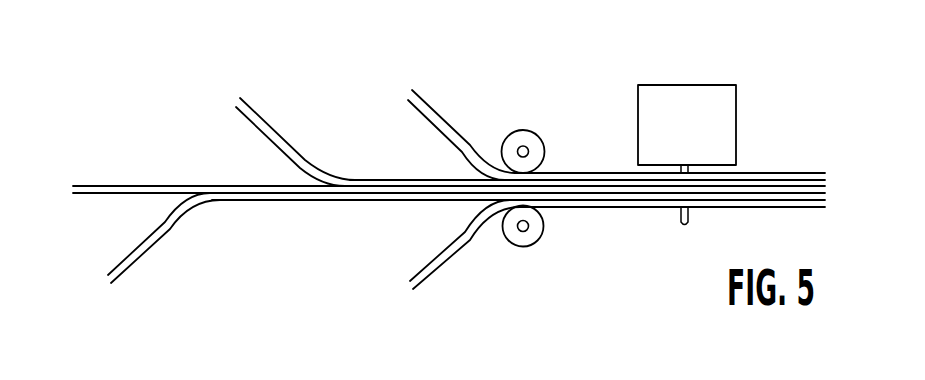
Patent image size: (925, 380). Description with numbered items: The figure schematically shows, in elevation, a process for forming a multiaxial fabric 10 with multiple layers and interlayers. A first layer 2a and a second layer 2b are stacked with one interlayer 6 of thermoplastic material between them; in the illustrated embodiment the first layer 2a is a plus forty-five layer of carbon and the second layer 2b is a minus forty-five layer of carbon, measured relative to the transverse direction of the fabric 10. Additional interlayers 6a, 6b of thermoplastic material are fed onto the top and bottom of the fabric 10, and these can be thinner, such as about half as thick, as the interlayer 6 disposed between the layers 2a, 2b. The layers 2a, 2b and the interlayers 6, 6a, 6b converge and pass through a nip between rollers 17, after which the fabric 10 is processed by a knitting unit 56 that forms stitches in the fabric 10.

The interlayer 6 is at (107, 190).
The first layer 2a is at (250, 117).
The second layer 2b is at (132, 252).
The top interlayer 6a is at (435, 125).
The bottom interlayer 6b is at (445, 248).
The rollers 17 is at (537, 148).
The knitting unit 56 is at (702, 130).
The multiaxial fabric 10 is at (825, 131).